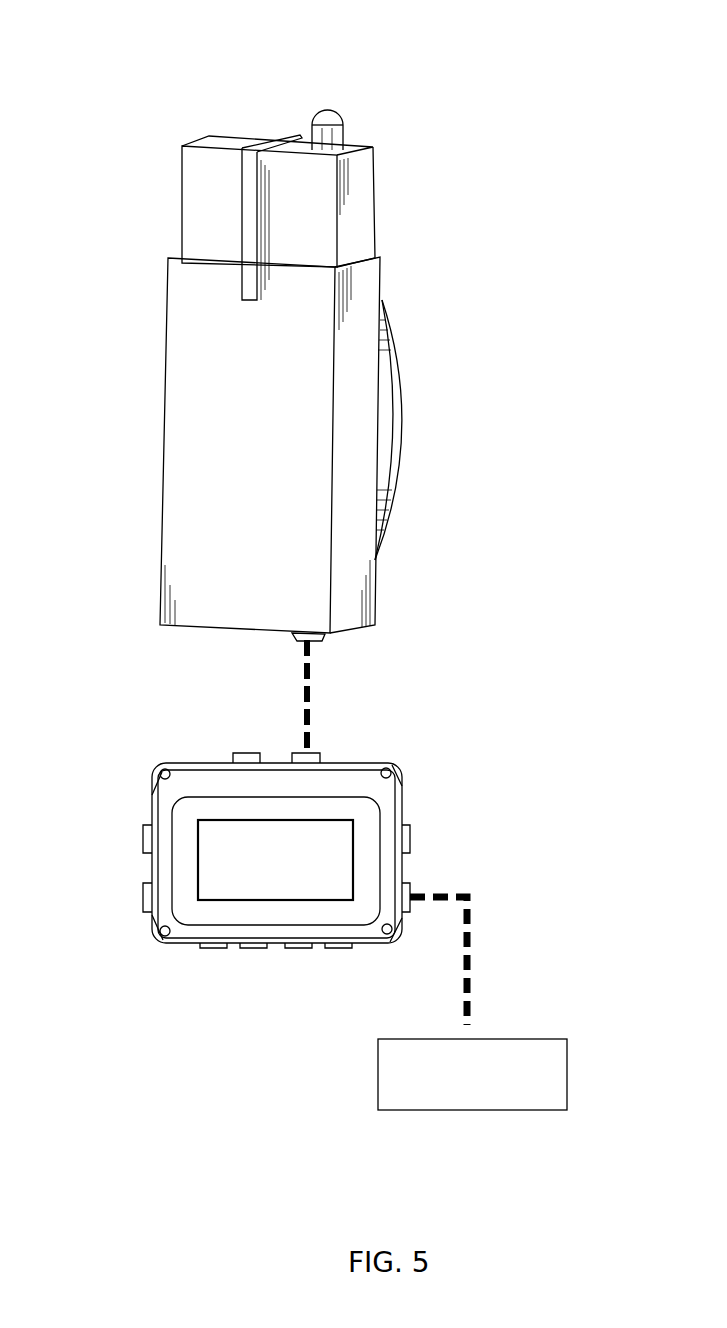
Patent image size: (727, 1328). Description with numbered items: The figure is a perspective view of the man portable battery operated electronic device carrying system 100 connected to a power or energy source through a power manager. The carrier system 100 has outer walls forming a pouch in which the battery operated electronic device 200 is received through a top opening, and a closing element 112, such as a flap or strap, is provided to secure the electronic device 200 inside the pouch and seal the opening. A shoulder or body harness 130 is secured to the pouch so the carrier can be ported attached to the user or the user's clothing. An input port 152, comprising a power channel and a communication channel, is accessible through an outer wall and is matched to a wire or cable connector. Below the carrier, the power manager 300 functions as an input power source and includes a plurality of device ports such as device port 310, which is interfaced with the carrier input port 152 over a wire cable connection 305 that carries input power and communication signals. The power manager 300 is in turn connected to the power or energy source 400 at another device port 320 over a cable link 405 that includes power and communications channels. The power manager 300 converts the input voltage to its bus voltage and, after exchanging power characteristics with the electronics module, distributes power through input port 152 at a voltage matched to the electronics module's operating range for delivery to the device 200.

The electronic device carrying system 100 is at (170, 257).
The closing element 112 is at (258, 145).
The shoulder or body harness 130 is at (400, 418).
The input port 152 is at (318, 642).
The battery operated electronic device 200 is at (358, 220).
The power manager 300 is at (393, 779).
The communication link 305 is at (298, 690).
The device port 310 is at (295, 748).
The device port 320 is at (408, 887).
The power or energy source 400 is at (525, 1038).
The cable link 405 is at (472, 942).